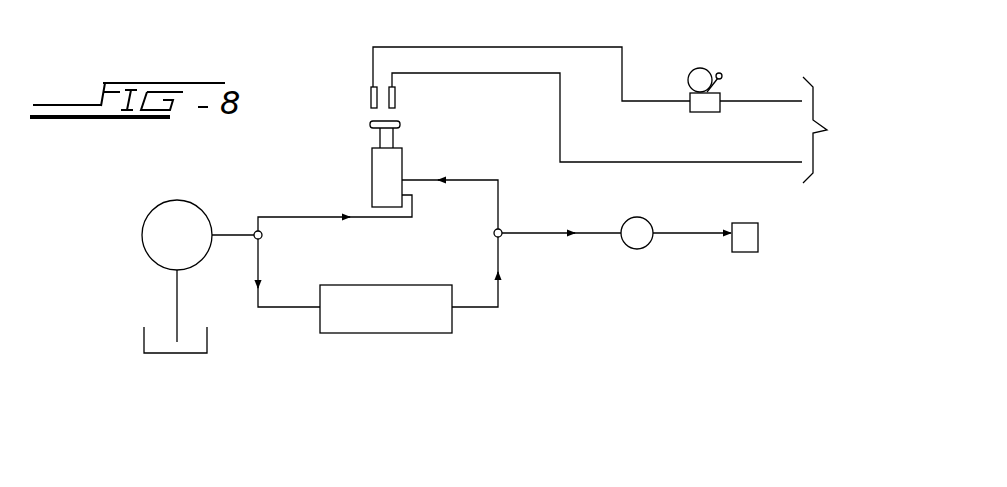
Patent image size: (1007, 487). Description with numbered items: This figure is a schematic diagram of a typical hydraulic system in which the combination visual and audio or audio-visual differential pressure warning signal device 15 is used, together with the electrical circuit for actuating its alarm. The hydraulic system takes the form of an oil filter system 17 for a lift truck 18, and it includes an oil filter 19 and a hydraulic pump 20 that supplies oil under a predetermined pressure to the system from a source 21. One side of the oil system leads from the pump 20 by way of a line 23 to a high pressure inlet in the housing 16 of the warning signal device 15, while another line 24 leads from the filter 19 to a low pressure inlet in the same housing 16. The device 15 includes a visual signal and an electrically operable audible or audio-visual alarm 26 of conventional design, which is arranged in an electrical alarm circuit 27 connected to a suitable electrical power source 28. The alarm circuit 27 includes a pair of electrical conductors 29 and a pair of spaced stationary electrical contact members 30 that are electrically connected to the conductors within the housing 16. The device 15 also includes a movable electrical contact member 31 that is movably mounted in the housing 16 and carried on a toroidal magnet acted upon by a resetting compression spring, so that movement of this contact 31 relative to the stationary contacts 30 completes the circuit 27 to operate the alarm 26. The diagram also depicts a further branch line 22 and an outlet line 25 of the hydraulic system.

The differential pressure warning signal device 15 is at (371, 172).
The housing 16 is at (406, 167).
The oil filter system 17 is at (281, 313).
The lift truck 18 is at (745, 252).
The oil filter 19 is at (382, 333).
The hydraulic pump 20 is at (180, 200).
The source 21 is at (182, 355).
The bypass line 22 is at (262, 258).
The line 23 is at (300, 216).
The line 24 is at (499, 210).
The output line 25 is at (544, 235).
The audible or audio-visual alarm 26 is at (706, 68).
The electrical alarm circuit 27 is at (556, 45).
The electrical power source 28 is at (815, 97).
The electrical conductors 29 is at (465, 72).
The stationary electrical contact members 30 is at (371, 92).
The movable electrical contact member 31 is at (403, 123).